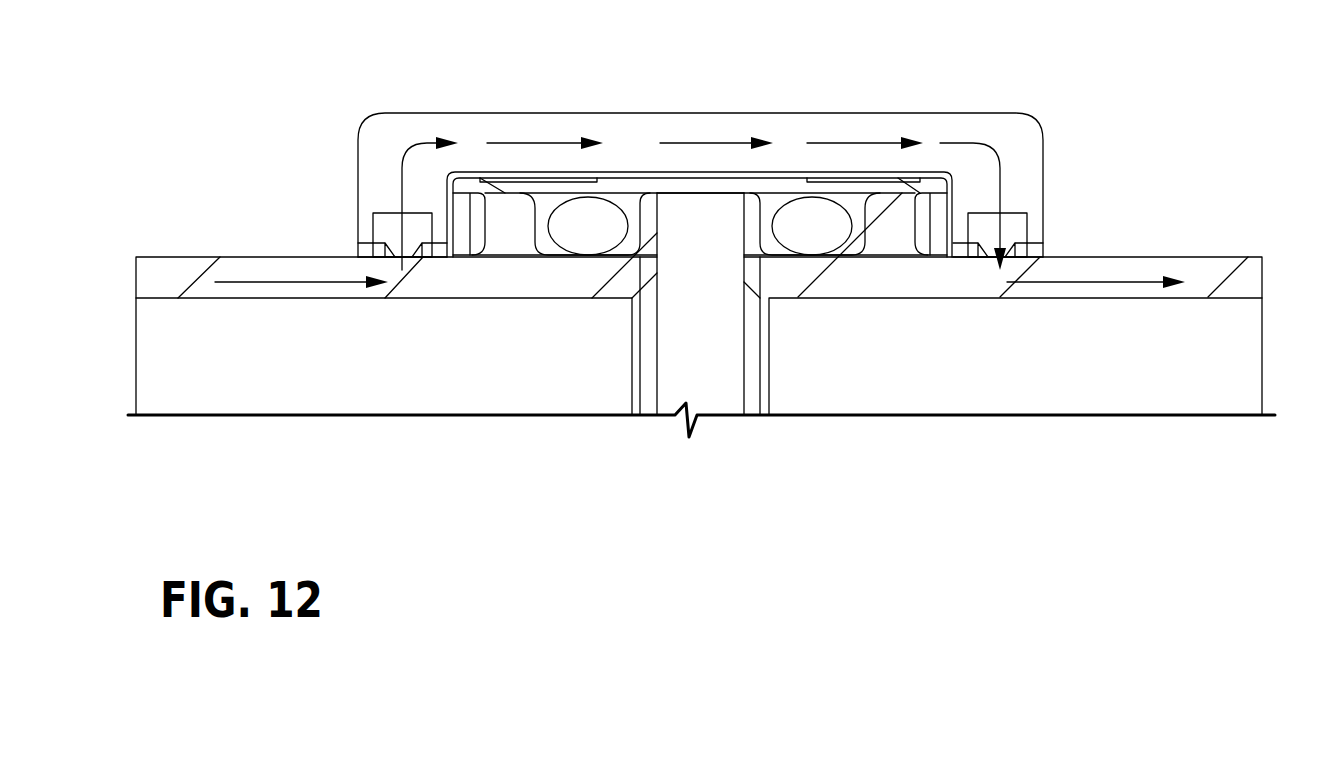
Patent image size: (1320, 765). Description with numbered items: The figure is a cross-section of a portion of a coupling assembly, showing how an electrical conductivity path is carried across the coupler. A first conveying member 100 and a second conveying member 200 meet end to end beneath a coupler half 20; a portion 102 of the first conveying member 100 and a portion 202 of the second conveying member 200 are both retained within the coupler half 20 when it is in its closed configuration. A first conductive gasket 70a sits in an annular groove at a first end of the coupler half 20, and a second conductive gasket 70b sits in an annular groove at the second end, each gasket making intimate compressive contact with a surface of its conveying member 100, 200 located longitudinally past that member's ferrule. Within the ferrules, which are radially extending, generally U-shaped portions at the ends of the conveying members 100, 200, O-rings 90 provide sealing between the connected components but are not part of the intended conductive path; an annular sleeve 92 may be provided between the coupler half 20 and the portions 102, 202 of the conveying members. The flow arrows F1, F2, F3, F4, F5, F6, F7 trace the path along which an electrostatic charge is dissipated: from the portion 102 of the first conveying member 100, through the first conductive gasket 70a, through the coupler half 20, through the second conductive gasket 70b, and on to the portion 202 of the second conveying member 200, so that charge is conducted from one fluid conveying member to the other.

The coupler half 20 is at (577, 97).
The sleeve 92 is at (665, 183).
The O-rings 90 is at (600, 213).
The first conductive gasket 70a is at (387, 228).
The second conductive gasket 70b is at (1015, 228).
The conveying member 100 is at (490, 365).
The portion 102 is at (532, 287).
The conveying member 200 is at (1000, 363).
The portion 202 is at (885, 287).
The flow arrow F1 is at (283, 281).
The flow arrow F2 is at (425, 141).
The flow arrow F3 is at (553, 143).
The flow arrow F4 is at (727, 143).
The flow arrow F5 is at (855, 143).
The flow arrow F6 is at (977, 143).
The flow arrow F7 is at (1147, 281).